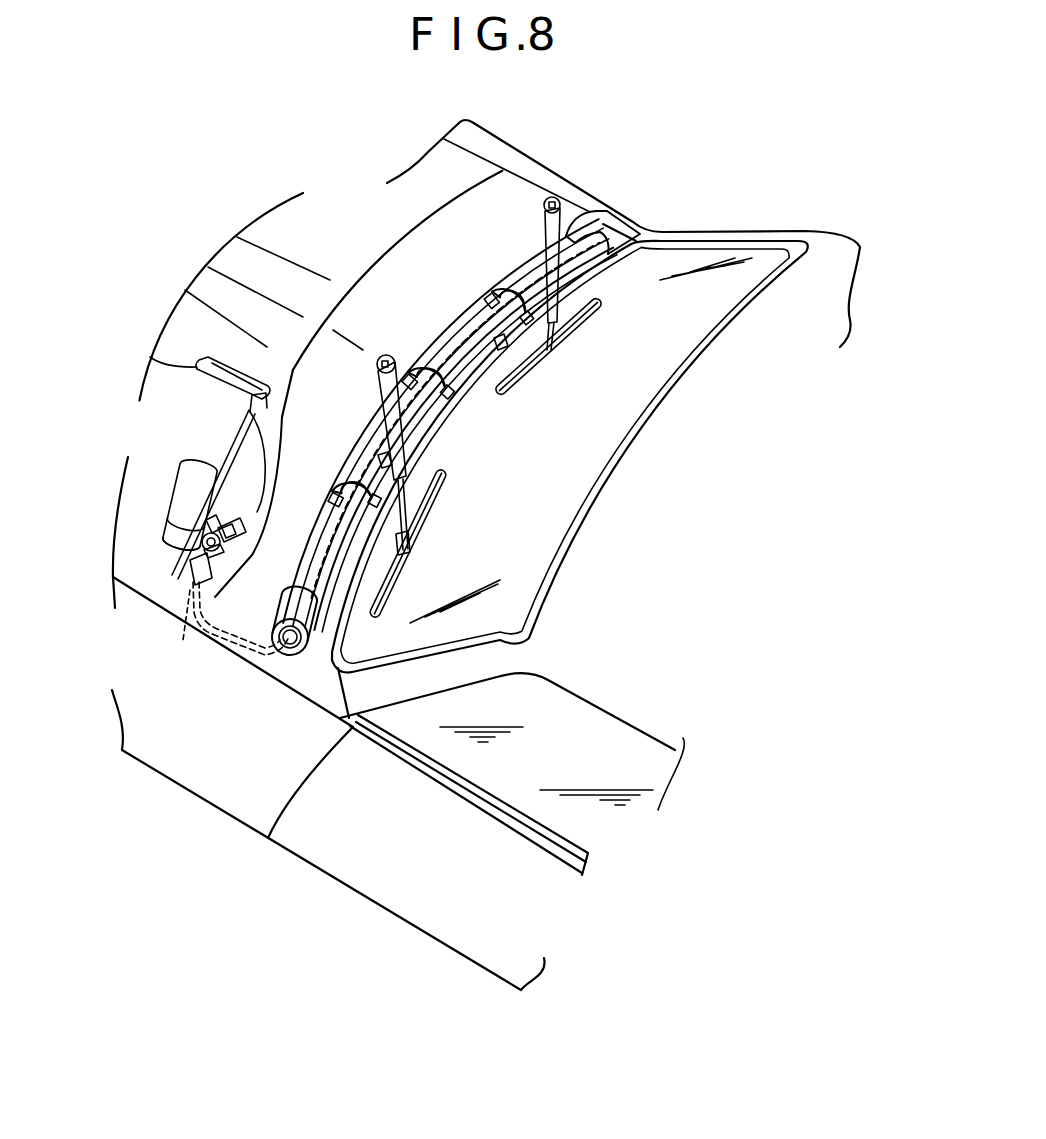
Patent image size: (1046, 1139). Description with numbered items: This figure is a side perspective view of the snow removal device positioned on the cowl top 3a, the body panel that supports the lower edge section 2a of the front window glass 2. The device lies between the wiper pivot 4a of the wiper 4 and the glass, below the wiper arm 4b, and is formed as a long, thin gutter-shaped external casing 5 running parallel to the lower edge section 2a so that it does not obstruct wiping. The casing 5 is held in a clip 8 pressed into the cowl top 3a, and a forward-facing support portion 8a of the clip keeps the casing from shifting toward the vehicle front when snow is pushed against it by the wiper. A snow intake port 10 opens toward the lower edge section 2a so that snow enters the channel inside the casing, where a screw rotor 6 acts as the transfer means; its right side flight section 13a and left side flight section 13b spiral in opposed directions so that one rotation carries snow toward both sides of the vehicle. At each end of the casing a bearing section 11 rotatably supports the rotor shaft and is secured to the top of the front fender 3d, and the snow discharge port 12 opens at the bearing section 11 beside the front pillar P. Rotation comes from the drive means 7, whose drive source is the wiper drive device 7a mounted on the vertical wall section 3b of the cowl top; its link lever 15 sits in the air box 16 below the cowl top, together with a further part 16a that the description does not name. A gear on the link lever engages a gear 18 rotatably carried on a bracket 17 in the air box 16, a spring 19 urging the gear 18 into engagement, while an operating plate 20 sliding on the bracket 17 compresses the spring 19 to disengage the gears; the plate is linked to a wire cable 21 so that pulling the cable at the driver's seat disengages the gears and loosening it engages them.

The front window glass 2 is at (617, 410).
The lower edge section 2a is at (524, 358).
The cowl top 3a is at (485, 195).
The vertical wall section 3b is at (235, 442).
The front fender 3d is at (311, 688).
The wiper 4 is at (558, 224).
The wiper pivot 4a is at (588, 290).
The wiper arm 4b is at (234, 537).
The external casing 5 is at (458, 332).
The screw rotor 6 is at (368, 453).
The drive means 7 is at (185, 487).
The wiper drive device 7a is at (234, 645).
The clip 8 is at (512, 281).
The support portion 8a is at (487, 289).
The snow intake port 10 is at (502, 350).
The bearing section 11 is at (607, 227).
The snow discharge port 12 is at (290, 648).
The right side flight section 13a is at (323, 565).
The left side flight section 13b is at (527, 272).
The link lever 15 is at (240, 372).
The air box 16 is at (230, 526).
The gear housing 16a is at (207, 518).
The bracket 17 is at (222, 565).
The gear 18 is at (192, 564).
The spring 19 is at (203, 530).
The operating plate 20 is at (206, 553).
The wire cable 21 is at (207, 540).
The front pillar P is at (766, 232).